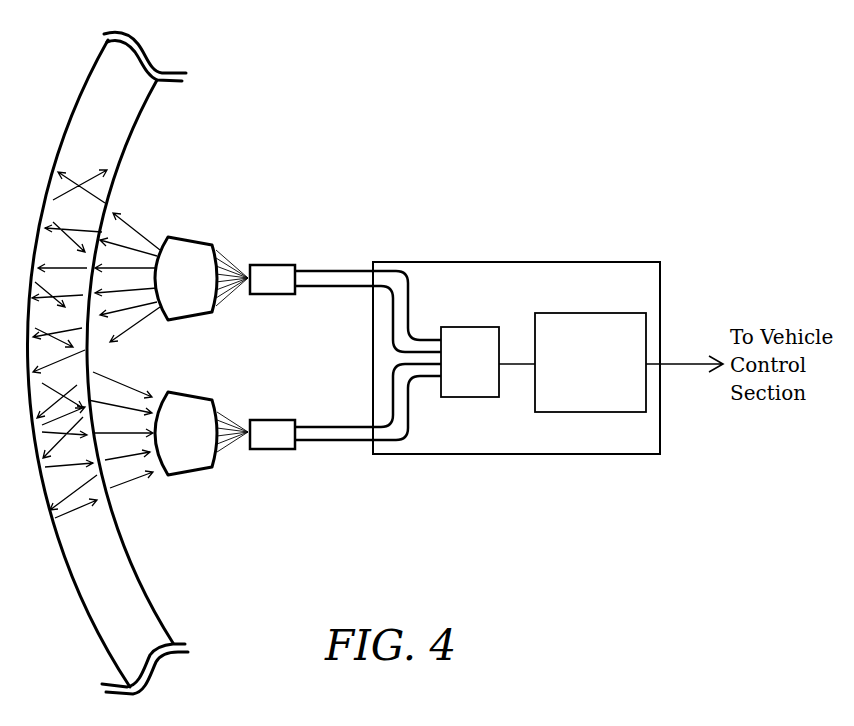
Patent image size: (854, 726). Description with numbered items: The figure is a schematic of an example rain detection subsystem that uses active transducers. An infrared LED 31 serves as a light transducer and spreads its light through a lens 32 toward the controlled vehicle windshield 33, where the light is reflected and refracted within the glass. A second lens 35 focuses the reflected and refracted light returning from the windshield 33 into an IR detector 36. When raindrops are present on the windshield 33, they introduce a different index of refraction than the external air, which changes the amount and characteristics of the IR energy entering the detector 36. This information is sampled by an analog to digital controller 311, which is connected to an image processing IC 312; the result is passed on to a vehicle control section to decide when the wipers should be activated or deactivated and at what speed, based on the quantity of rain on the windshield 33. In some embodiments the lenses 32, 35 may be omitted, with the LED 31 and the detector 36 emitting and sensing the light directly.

The vehicle windshield 33 is at (133, 127).
The lens 32 is at (185, 320).
The infrared LED 31 is at (266, 265).
The lens 35 is at (183, 475).
The IR detector 36 is at (268, 420).
The analog to digital controller 311 is at (468, 327).
The image processing IC 312 is at (600, 313).